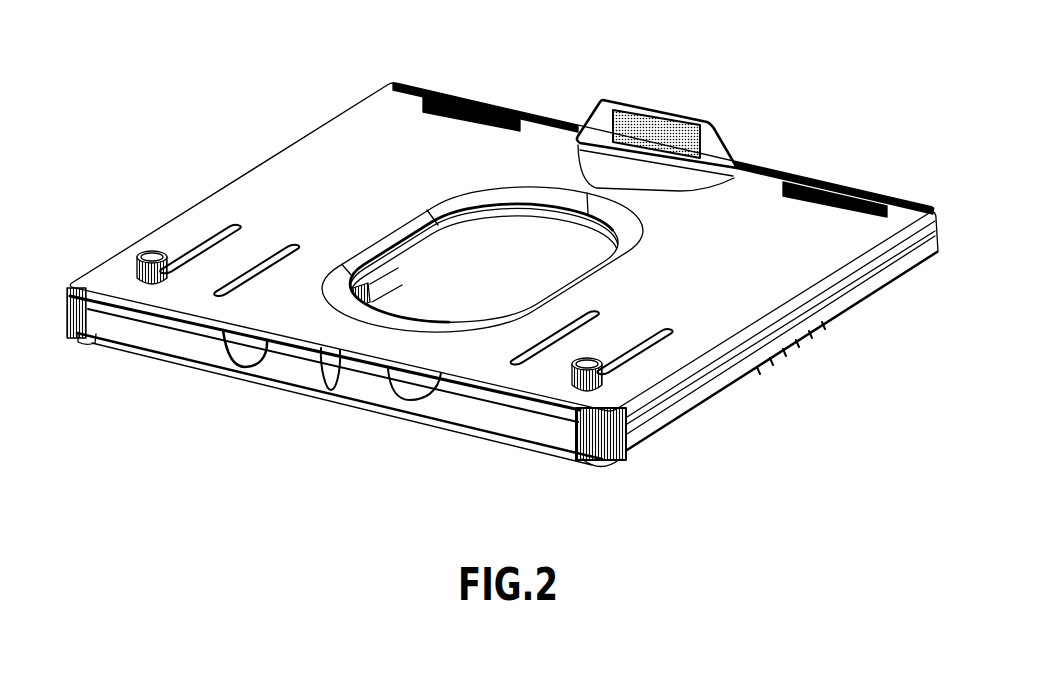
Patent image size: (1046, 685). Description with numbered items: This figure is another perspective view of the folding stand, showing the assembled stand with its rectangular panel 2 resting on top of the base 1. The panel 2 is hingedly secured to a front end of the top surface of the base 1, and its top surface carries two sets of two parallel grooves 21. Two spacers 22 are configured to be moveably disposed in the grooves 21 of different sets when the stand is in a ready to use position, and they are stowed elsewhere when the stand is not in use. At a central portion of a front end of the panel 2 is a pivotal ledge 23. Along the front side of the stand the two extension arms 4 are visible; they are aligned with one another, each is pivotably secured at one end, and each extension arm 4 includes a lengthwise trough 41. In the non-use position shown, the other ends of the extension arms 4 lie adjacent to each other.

The base 1 is at (720, 377).
The panel 2 is at (288, 178).
The grooves 21 is at (200, 240).
The spacers 22 is at (140, 257).
The pivotal ledge 23 is at (660, 108).
The extension arms 4 is at (167, 337).
The lengthwise trough 41 is at (247, 365).